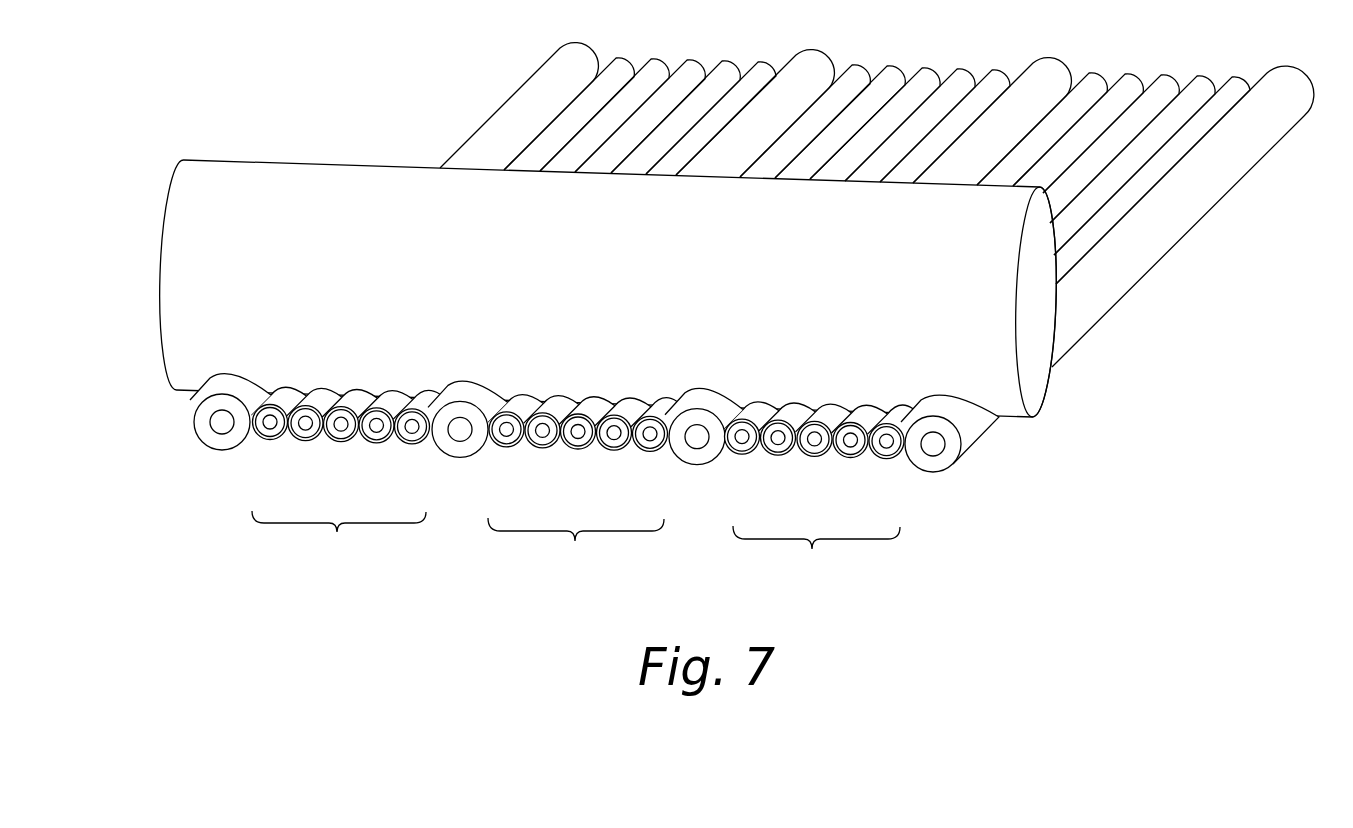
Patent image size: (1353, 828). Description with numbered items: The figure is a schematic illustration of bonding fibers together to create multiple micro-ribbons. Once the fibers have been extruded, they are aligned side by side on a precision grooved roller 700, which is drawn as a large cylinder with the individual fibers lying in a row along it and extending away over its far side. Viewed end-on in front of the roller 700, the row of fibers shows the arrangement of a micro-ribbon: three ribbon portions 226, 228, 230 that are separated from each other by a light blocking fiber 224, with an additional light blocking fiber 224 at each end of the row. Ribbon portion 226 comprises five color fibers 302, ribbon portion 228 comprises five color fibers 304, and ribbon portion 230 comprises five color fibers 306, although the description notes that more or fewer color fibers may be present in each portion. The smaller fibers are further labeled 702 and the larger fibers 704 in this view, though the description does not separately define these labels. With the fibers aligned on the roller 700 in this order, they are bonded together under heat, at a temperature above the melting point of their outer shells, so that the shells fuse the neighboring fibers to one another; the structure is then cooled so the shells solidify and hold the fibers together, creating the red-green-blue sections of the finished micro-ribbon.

The precision grooved roller 700 is at (161, 264).
The optical fiber 702 is at (324, 388).
The rod 704 is at (236, 373).
The light blocking fiber 224 is at (216, 455).
The color fibers 302 is at (306, 451).
The color fibers 304 is at (543, 456).
The color fibers 306 is at (779, 464).
The ribbon portion 226 is at (339, 541).
The ribbon portion 228 is at (576, 547).
The ribbon portion 230 is at (816, 555).